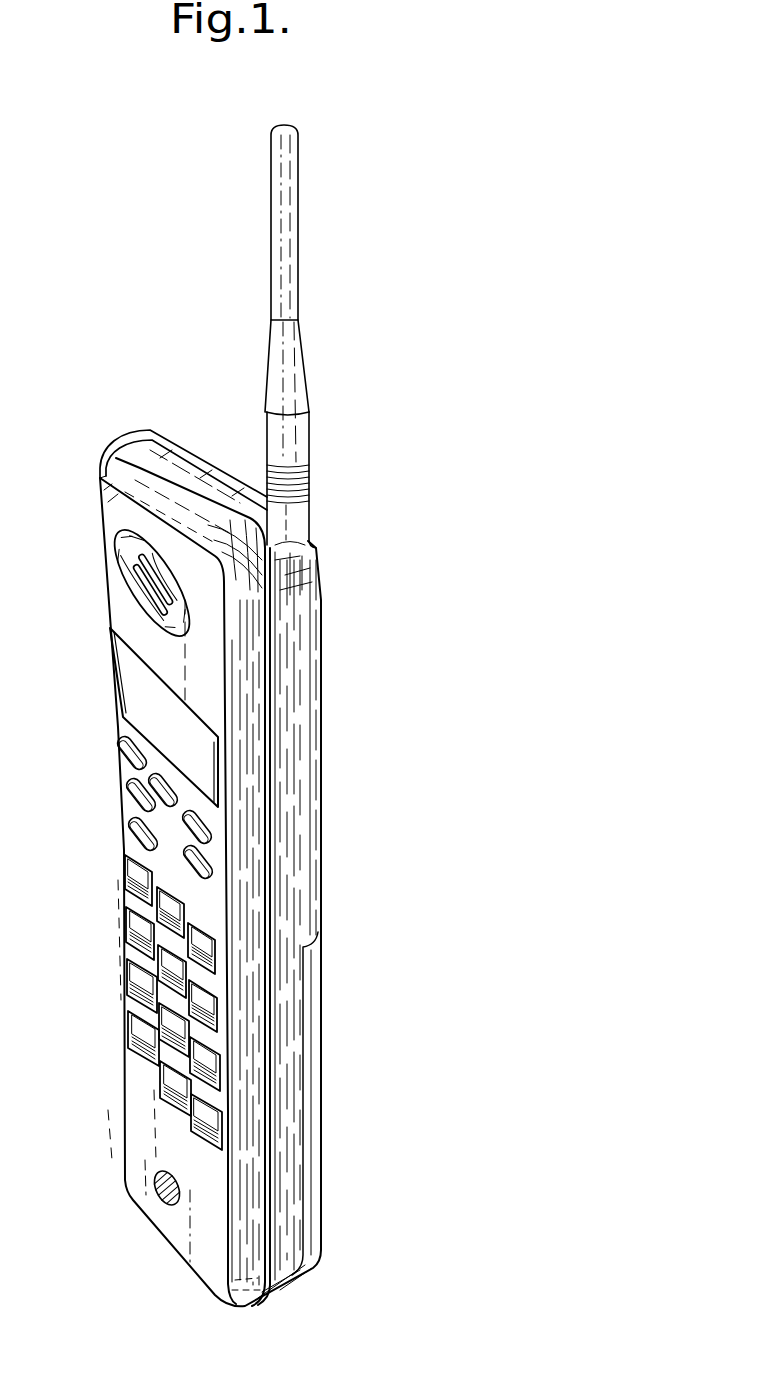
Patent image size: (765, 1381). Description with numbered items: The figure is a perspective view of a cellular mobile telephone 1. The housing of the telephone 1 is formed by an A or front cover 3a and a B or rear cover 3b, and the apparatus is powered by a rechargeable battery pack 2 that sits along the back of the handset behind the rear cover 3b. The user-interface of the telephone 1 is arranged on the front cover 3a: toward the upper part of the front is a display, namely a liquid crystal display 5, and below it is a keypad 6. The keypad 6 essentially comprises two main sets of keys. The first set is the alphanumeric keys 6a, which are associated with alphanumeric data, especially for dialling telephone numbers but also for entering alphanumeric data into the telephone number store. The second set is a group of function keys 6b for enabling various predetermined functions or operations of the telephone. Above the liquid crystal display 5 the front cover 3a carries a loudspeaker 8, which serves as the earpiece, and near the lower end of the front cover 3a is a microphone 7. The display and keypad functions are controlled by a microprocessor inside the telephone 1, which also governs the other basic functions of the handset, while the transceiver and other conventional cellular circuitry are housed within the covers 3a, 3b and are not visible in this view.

The telephone 1 is at (352, 572).
The rechargeable battery pack 2 is at (310, 1160).
The front cover 3a is at (100, 517).
The rear cover 3b is at (187, 449).
The liquid crystal display 5 is at (135, 663).
The keypad 6 is at (222, 1000).
The alphanumeric keys 6a is at (165, 911).
The function keys 6b is at (148, 792).
The microphone 7 is at (158, 1196).
The loudspeaker 8 is at (130, 583).